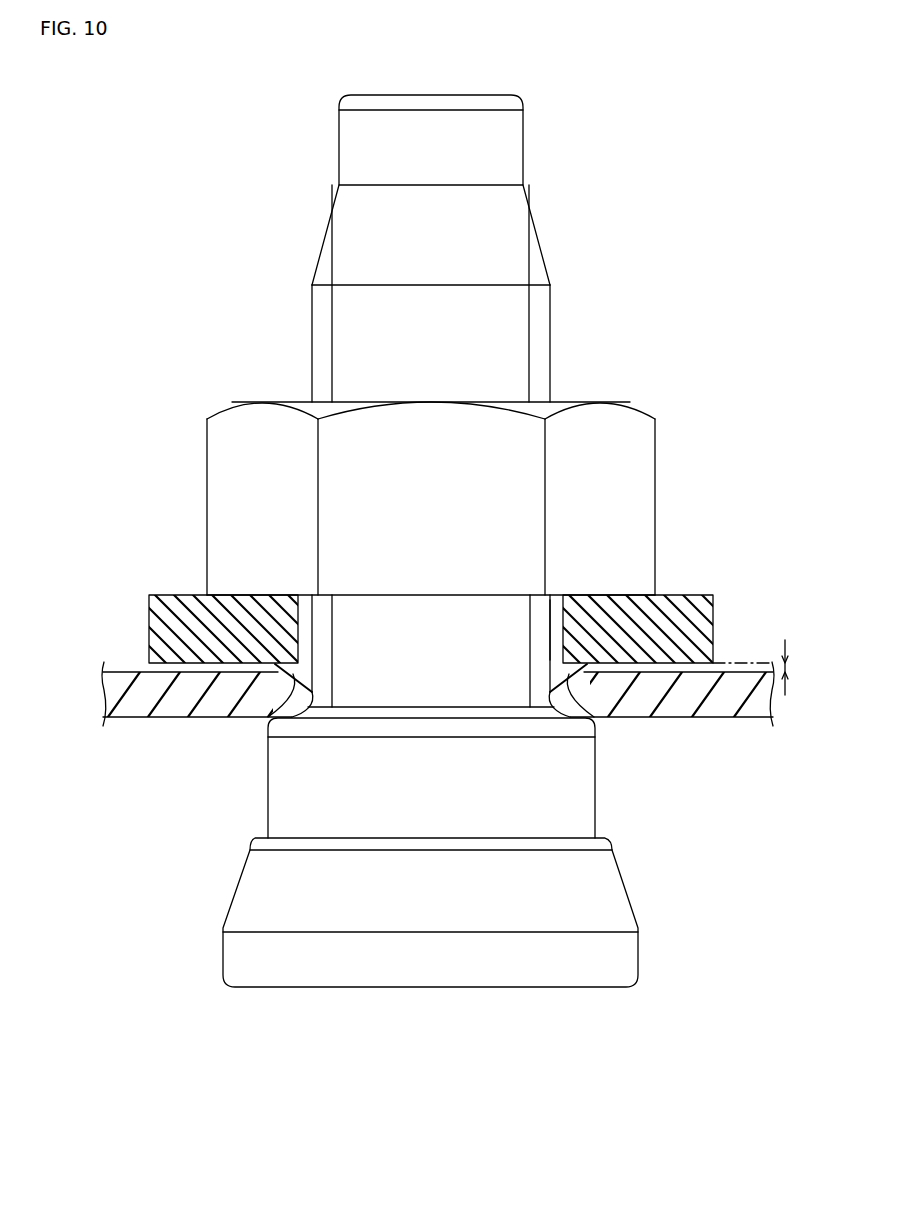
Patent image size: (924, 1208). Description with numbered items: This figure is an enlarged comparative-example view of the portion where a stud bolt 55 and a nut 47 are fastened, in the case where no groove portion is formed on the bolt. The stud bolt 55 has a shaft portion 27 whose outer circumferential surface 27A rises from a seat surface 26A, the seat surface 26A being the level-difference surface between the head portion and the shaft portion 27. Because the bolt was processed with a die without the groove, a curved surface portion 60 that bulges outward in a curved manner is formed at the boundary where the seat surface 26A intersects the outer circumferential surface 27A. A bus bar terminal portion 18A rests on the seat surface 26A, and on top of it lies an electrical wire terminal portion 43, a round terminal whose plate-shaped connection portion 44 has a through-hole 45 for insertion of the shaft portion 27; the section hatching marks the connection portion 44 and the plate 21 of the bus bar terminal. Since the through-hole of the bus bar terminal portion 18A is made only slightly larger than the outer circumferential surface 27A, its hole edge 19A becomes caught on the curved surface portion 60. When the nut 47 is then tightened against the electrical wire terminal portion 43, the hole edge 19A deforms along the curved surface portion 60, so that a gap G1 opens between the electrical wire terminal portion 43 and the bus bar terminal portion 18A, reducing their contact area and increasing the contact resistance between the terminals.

The nut 47 is at (281, 433).
The through-hole 45 is at (297, 628).
The connection portion 44 is at (150, 642).
The electrical wire terminal portion 43 is at (631, 629).
The shaft portion 27 is at (508, 614).
The outer circumferential surface 27A is at (553, 633).
The hole edge 19A is at (287, 682).
The gap G1 is at (786, 663).
The curved surface portion 60 is at (278, 712).
The bus bar terminal portion 18A is at (747, 720).
The plate member 21 is at (127, 703).
The seat surface 26A is at (467, 703).
The stud bolt 55 is at (652, 797).